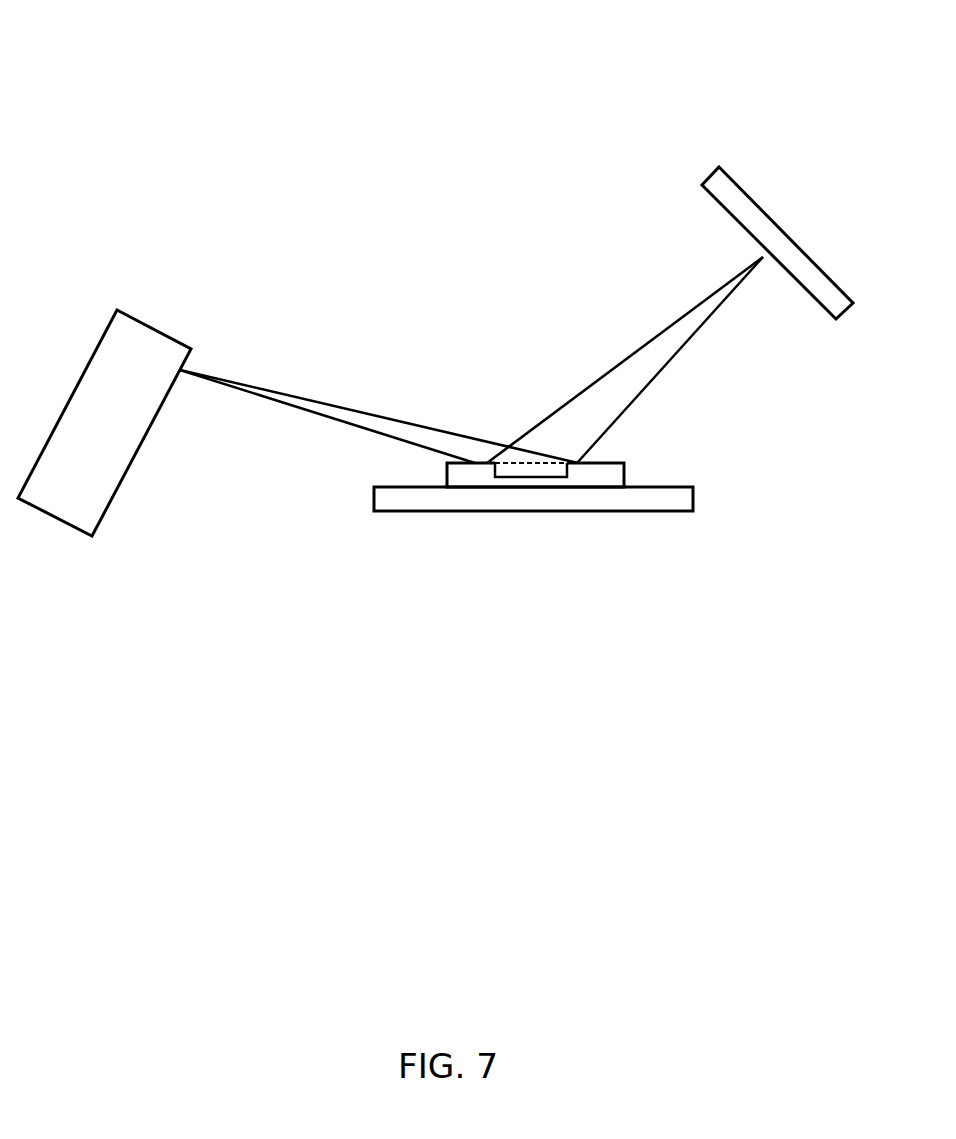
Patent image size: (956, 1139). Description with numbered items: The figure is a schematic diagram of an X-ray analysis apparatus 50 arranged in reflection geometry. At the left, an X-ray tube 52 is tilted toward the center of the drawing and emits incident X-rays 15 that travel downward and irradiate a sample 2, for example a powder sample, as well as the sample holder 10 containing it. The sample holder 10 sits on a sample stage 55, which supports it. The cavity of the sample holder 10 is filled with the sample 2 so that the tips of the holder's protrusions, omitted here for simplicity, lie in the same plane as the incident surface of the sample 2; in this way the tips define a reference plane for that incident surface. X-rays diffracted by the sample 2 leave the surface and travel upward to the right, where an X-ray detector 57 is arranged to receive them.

The X-ray analysis apparatus 50 is at (224, 147).
The X-ray tube 52 is at (93, 350).
The incident X-rays 15 is at (345, 407).
The X-ray detector 57 is at (743, 190).
The sample holder 10 is at (627, 465).
The sample 2 is at (535, 470).
The sample stage 55 is at (695, 500).